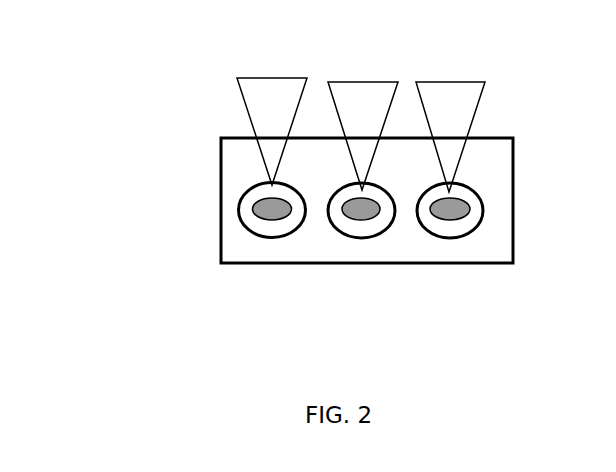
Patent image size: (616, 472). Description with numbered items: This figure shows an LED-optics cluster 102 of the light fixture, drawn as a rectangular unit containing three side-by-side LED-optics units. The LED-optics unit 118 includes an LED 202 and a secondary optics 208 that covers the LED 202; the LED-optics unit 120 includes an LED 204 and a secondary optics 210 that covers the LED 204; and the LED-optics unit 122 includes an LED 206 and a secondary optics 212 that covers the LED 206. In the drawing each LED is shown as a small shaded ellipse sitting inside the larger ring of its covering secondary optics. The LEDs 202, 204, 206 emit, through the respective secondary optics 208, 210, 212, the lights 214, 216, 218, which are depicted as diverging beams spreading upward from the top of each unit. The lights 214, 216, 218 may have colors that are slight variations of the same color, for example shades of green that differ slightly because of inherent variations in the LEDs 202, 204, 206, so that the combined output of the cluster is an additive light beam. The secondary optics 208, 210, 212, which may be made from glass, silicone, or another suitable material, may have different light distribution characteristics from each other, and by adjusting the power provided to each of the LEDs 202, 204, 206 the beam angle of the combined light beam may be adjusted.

The sensor device 102 is at (155, 122).
The LED-optics unit 118 is at (207, 249).
The LED-optics unit 120 is at (417, 282).
The LED-optics unit 122 is at (516, 226).
The LED 202 is at (263, 217).
The LED 204 is at (349, 219).
The LED 206 is at (448, 217).
The secondary optics 208 is at (263, 237).
The secondary optics 210 is at (372, 232).
The secondary optics 212 is at (477, 230).
The light 214 is at (255, 111).
The light 216 is at (360, 93).
The light 218 is at (464, 123).